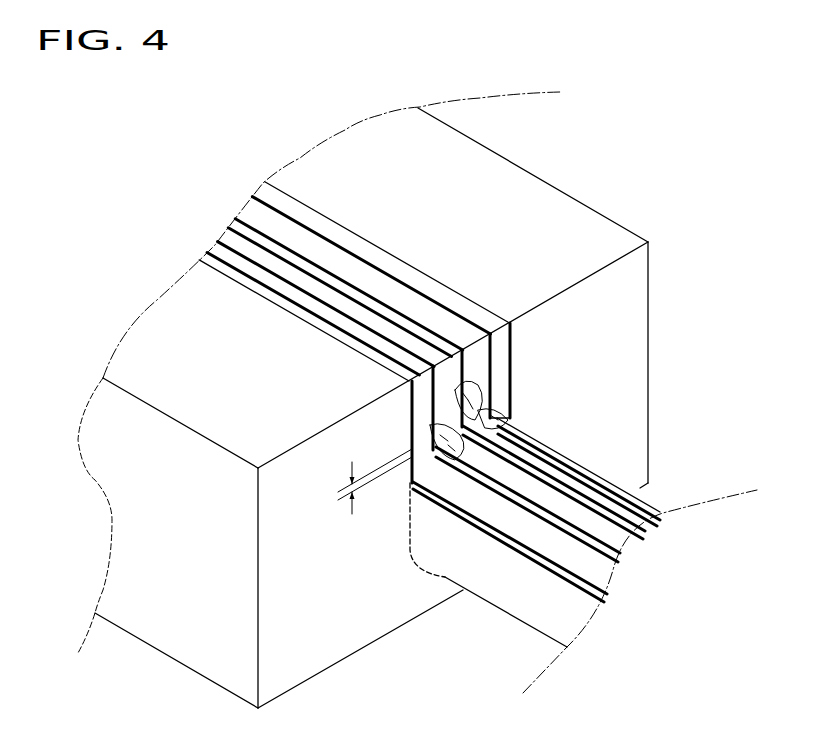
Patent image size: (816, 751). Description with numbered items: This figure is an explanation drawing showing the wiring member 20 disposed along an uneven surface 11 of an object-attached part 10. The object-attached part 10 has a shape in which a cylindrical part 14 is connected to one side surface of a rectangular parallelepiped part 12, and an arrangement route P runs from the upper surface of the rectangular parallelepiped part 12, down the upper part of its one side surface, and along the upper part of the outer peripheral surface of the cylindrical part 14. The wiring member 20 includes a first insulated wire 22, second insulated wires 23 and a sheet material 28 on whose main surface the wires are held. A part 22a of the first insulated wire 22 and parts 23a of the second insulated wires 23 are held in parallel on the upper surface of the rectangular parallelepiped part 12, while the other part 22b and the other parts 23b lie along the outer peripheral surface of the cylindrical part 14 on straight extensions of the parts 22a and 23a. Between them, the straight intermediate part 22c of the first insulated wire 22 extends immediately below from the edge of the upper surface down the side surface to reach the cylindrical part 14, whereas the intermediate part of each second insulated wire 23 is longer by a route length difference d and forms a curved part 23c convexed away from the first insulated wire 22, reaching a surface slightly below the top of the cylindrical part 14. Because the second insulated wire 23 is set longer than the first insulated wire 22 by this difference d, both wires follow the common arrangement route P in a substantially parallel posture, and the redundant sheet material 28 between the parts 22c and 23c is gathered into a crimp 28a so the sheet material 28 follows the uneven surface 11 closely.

The object-attached part 10 is at (563, 158).
The uneven surface 11 is at (603, 218).
The rectangular parallelepiped part 12 is at (160, 653).
The cylindrical part 14 is at (541, 636).
The wiring member 20 is at (433, 267).
The first insulated wire 22 is at (240, 222).
The part of the first insulated wire 22a is at (352, 292).
The other part of the first insulated wire 22b is at (640, 517).
The intermediate part of the first insulated wire 22c is at (513, 333).
The second insulated wire 23 is at (263, 193).
The part of the second insulated wire 23a is at (304, 226).
The other part of the second insulated wire 23b is at (650, 496).
The curved part 23c is at (496, 376).
The sheet material 28 is at (481, 305).
The crimp 28a is at (490, 410).
The arrangement route P is at (388, 268).
The route length difference d is at (350, 514).